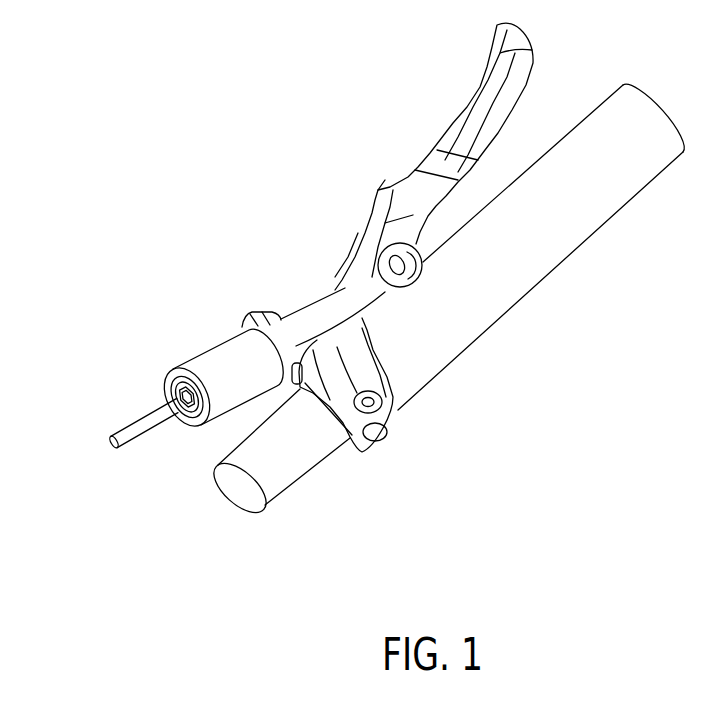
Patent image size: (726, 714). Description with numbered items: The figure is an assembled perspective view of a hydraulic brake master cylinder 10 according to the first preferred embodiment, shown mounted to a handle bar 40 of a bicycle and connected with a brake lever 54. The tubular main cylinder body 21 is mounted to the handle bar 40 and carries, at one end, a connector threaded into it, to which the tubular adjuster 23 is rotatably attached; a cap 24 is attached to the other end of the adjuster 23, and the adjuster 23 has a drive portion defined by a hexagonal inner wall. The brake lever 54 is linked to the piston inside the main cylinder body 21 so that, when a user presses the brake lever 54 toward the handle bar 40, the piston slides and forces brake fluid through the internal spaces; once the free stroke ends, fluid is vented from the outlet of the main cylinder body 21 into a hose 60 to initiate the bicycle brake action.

The hydraulic brake master cylinder 10 is at (246, 305).
The main cylinder body 21 is at (310, 302).
The adjuster 23 is at (207, 337).
The cap 24 is at (172, 398).
The handle bar 40 is at (570, 260).
The brake lever 54 is at (472, 88).
The hose 60 is at (145, 440).